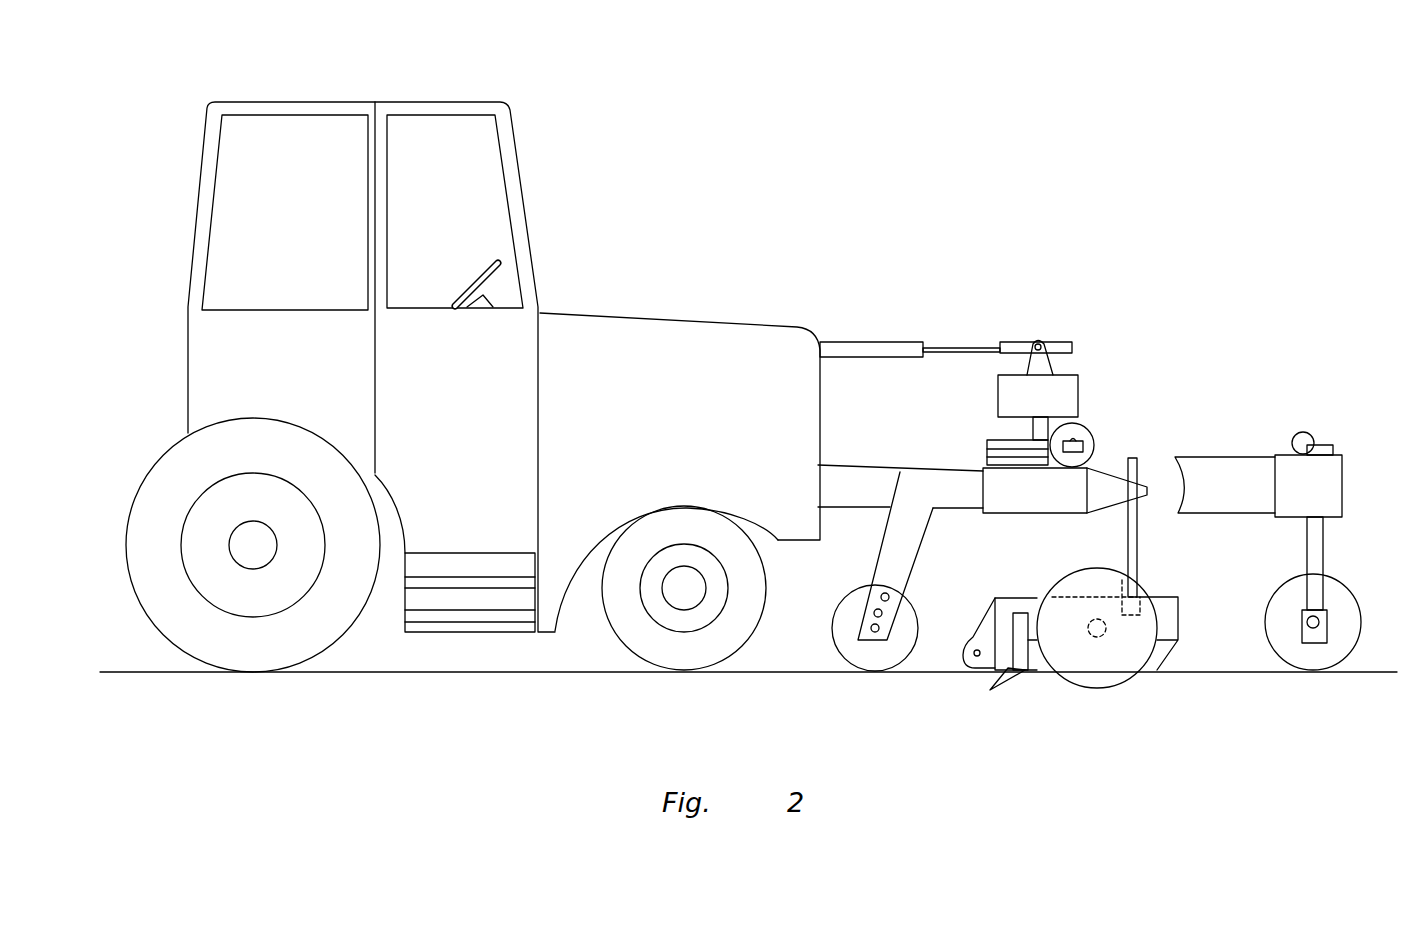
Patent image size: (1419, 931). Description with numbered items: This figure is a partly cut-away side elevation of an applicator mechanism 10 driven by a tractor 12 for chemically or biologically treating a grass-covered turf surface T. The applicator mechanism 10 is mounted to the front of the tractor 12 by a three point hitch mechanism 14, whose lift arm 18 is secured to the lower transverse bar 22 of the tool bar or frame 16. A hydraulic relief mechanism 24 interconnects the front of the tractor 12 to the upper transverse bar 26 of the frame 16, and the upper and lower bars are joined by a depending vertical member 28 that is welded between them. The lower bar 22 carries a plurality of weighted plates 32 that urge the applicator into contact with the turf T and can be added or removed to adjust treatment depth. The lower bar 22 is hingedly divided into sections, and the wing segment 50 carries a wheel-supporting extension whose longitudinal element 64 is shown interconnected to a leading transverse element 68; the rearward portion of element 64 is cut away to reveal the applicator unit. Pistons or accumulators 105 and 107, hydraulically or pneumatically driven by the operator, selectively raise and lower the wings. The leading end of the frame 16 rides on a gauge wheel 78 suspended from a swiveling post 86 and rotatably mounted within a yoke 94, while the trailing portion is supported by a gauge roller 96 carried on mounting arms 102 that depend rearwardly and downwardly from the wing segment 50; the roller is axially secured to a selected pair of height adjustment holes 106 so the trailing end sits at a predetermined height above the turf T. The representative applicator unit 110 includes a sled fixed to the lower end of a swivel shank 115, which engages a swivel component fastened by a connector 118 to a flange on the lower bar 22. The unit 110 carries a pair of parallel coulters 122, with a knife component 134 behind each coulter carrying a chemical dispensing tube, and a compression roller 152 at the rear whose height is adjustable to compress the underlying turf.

The applicator mechanism 10 is at (1062, 195).
The tractor 12 is at (518, 167).
The three point hitch mechanism 14 is at (487, 387).
The tool bar or frame 16 is at (1000, 513).
The lift arm 18 is at (888, 465).
The lower transverse bar 22 is at (1068, 513).
The hydraulic relief mechanism 24 is at (887, 340).
The upper transverse bar 26 is at (1082, 387).
The depending vertical member 28 is at (1013, 425).
The weighted plates 32 is at (987, 453).
The wing segment 50 is at (1030, 513).
The longitudinal element 64 is at (1238, 455).
The leading transverse element 68 is at (1342, 477).
The gauge wheel 78 is at (1273, 650).
The swiveling post 86 is at (1323, 550).
The yoke 94 is at (1330, 637).
The gauge roller 96 is at (847, 662).
The mounting arm 102 is at (870, 570).
The piston or accumulator 105 is at (1087, 417).
The height adjustment holes 106 is at (887, 600).
The piston or accumulator 107 is at (1302, 432).
The applicator unit 110 is at (1120, 680).
The swivel shank 115 is at (1138, 543).
The connector 118 is at (1172, 652).
The cutting disk or coulter 122 is at (1083, 687).
The knife component 134 is at (1027, 672).
The compression roller 152 is at (987, 693).
The turf surface T is at (279, 676).